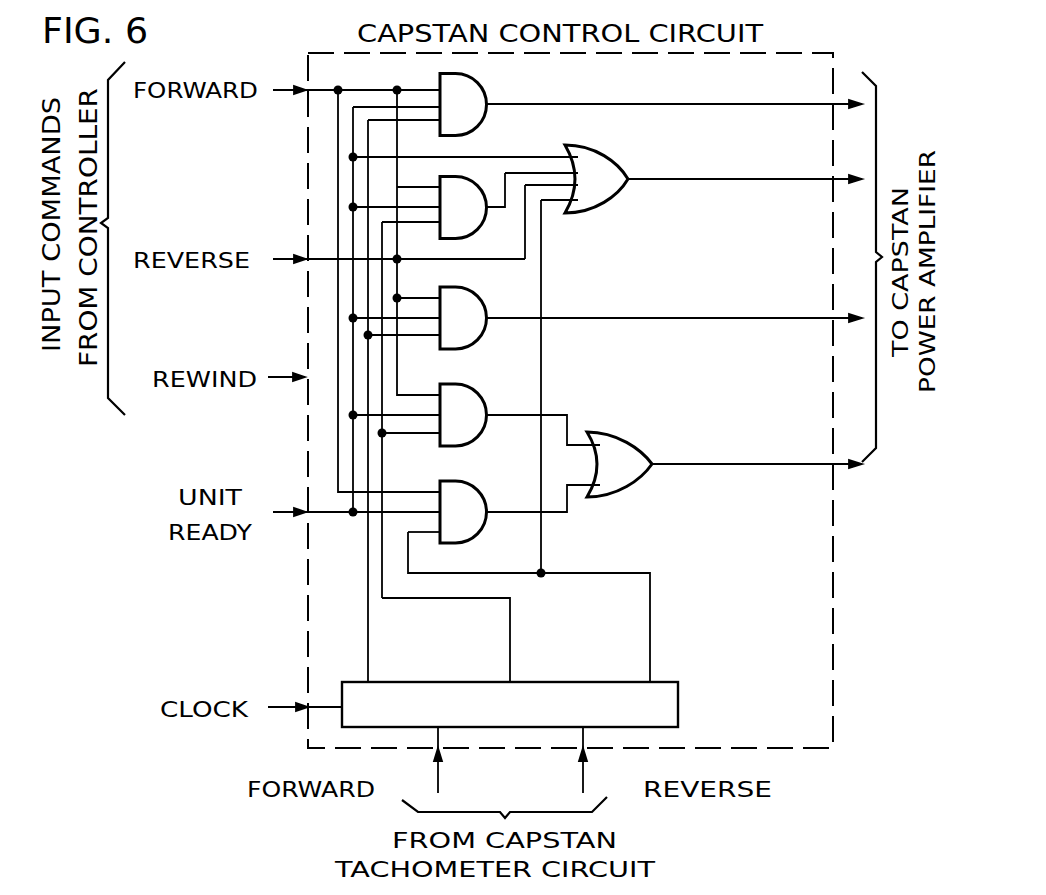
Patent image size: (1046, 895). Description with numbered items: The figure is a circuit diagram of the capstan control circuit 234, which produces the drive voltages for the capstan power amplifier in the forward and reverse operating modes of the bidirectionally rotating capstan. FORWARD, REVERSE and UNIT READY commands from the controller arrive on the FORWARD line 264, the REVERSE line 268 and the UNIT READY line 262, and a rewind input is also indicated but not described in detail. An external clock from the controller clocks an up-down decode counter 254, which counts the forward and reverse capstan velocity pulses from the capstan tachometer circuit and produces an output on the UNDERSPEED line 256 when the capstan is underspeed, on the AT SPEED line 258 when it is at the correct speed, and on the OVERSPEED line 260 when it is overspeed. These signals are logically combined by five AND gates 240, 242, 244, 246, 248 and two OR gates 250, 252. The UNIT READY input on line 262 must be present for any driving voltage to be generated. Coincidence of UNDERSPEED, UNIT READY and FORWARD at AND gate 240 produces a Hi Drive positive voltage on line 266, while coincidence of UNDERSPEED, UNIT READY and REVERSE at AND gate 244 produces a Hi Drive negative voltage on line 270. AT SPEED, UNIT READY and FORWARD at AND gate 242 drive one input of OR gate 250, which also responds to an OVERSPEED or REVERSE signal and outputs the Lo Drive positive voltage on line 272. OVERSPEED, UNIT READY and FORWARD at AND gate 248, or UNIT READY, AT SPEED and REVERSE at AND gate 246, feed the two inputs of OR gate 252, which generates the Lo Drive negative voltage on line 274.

The capstan control circuit 234 is at (306, 163).
The AND gate 240 is at (487, 88).
The AND gate 242 is at (483, 218).
The AND gate 244 is at (470, 342).
The AND gate 246 is at (462, 385).
The AND gate 248 is at (455, 483).
The OR gate 250 is at (606, 148).
The OR gate 252 is at (634, 393).
The up-down decode counter 254 is at (678, 710).
The UNDERSPEED line 256 is at (368, 643).
The AT SPEED line 258 is at (510, 617).
The OVERSPEED line 260 is at (686, 556).
The UNIT READY line 262 is at (284, 512).
The FORWARD line 264 is at (284, 90).
The Hi Drive positive line 266 is at (806, 105).
The REVERSE line 268 is at (284, 259).
The Hi Drive negative line 270 is at (800, 318).
The Lo Drive positive line 272 is at (798, 179).
The Lo Drive negative line 274 is at (768, 464).